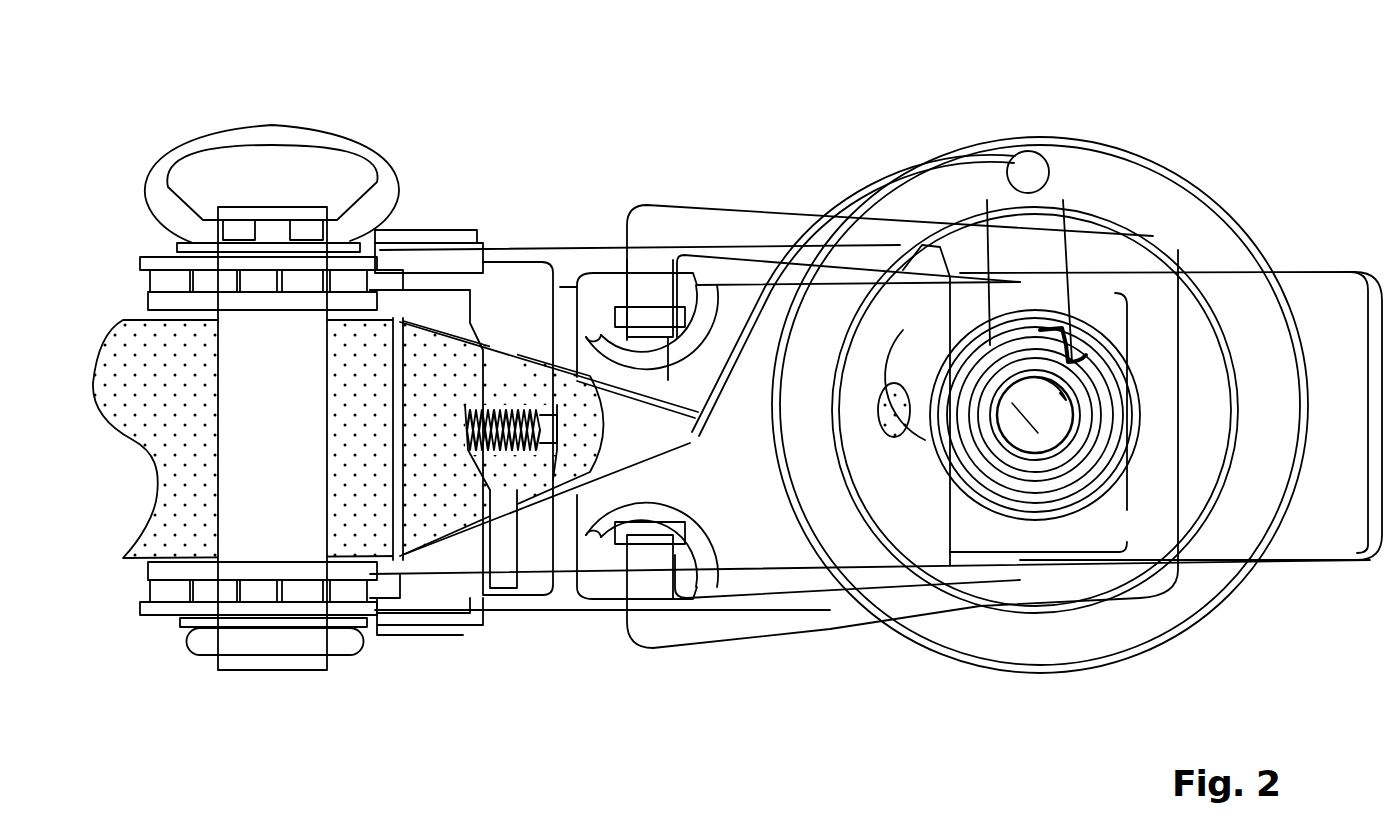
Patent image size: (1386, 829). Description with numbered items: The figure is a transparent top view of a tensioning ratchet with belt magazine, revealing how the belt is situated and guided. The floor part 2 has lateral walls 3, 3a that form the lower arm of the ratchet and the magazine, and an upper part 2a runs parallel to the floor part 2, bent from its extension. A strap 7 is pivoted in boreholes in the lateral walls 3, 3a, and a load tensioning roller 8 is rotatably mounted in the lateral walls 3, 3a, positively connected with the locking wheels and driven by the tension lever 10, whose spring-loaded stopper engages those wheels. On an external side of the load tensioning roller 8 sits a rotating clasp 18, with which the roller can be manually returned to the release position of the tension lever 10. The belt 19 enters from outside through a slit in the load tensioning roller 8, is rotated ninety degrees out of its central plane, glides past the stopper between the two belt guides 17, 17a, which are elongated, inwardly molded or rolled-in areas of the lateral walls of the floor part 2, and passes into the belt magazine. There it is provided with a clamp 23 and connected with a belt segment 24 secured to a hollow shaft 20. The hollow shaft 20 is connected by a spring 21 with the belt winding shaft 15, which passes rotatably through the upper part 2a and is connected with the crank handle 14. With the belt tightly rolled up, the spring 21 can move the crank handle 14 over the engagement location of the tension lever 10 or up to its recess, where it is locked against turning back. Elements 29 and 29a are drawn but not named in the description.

The floor part 2 is at (530, 545).
The upper part 2a is at (1338, 333).
The lateral wall 3 is at (170, 575).
The lateral wall 3a is at (163, 302).
The strap 7 is at (745, 233).
The load tensioning roller 8 is at (272, 377).
The tension lever 10 is at (748, 433).
The crank handle 14 is at (1030, 260).
The belt winding shaft 15 is at (1110, 420).
The belt guide 17 is at (597, 507).
The belt guide 17a is at (599, 348).
The rotating clasp 18 is at (360, 148).
The belt 19 is at (428, 478).
The hollow shaft 20 is at (1033, 433).
The spring 21 is at (1063, 443).
The clamp 23 is at (893, 437).
The belt segment 24 is at (903, 330).
The clip 29 is at (648, 540).
The clip 29a is at (653, 317).